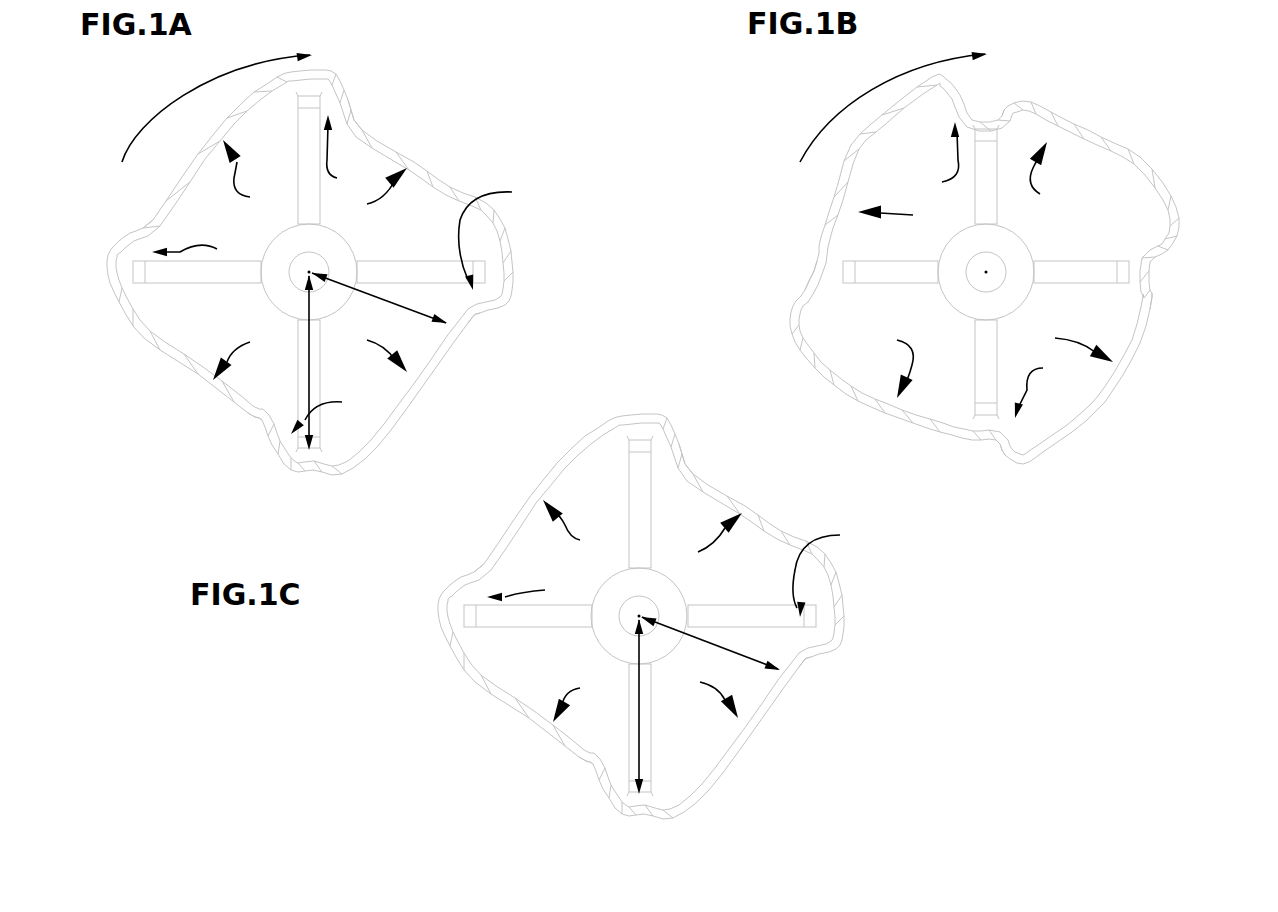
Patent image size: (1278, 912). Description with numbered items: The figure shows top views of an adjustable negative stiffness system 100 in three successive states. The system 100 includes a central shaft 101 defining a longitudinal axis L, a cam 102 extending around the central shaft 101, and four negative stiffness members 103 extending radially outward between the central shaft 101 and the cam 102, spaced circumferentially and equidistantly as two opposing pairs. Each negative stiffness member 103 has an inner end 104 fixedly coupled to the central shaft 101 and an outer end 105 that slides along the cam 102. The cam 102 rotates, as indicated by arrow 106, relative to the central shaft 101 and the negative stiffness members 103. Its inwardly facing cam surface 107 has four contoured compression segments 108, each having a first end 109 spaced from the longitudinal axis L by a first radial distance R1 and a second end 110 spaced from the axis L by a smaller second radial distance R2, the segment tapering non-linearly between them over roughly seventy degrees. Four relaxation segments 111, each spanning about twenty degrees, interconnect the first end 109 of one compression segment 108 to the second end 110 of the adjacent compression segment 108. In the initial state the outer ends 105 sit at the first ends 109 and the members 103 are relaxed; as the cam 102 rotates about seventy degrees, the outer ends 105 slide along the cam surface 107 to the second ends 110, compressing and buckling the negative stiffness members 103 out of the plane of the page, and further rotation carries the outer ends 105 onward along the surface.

In FIG. 1A, the adjustable negative stiffness system 100 is at (540, 112).
In FIG. 1B, the adjustable negative stiffness system 100 is at (1160, 75).
In FIG. 1C, the adjustable negative stiffness system 100 is at (395, 748).
In FIG. 1A, the central shaft 101 is at (328, 265).
In FIG. 1B, the central shaft 101 is at (1005, 280).
In FIG. 1C, the central shaft 101 is at (638, 620).
In FIG. 1A, the cam 102 is at (535, 222).
In FIG. 1B, the cam 102 is at (1130, 445).
In FIG. 1C, the cam 102 is at (435, 697).
In FIG. 1A, the negative stiffness members 103 is at (160, 290).
In FIG. 1B, the negative stiffness members 103 is at (1088, 262).
In FIG. 1C, the negative stiffness members 103 is at (629, 494).
In FIG. 1A, the inner end 104 is at (257, 284).
In FIG. 1B, the inner end 104 is at (932, 272).
In FIG. 1C, the inner end 104 is at (595, 616).
In FIG. 1A, the outer end 105 is at (322, 93).
In FIG. 1B, the outer end 105 is at (985, 122).
In FIG. 1C, the outer end 105 is at (634, 437).
In FIG. 1A, the arrow 106 is at (203, 90).
In FIG. 1B, the arrow 106 is at (882, 90).
In FIG. 1A, the inwardly facing cam surface 107 is at (410, 380).
In FIG. 1B, the inwardly facing cam surface 107 is at (905, 401).
In FIG. 1C, the inwardly facing cam surface 107 is at (742, 720).
In FIG. 1A, the contoured compression segments 108 is at (310, 260).
In FIG. 1B, the contoured compression segments 108 is at (984, 270).
In FIG. 1C, the contoured compression segments 108 is at (642, 610).
In FIG. 1A, the first end 109 is at (318, 90).
In FIG. 1B, the first end 109 is at (935, 98).
In FIG. 1C, the first end 109 is at (638, 437).
In FIG. 1A, the second end 110 is at (362, 130).
In FIG. 1B, the second end 110 is at (990, 122).
In FIG. 1C, the second end 110 is at (692, 477).
In FIG. 1A, the relaxation segments 111 is at (351, 276).
In FIG. 1B, the relaxation segments 111 is at (993, 270).
In FIG. 1C, the relaxation segments 111 is at (684, 572).
In FIG. 1A, the longitudinal axis L is at (311, 270).
In FIG. 1B, the longitudinal axis L is at (988, 271).
In FIG. 1C, the longitudinal axis L is at (642, 615).
In FIG. 1A, the first radial distance R1 is at (312, 372).
In FIG. 1C, the first radial distance R1 is at (641, 720).
In FIG. 1A, the second radial distance R2 is at (413, 311).
In FIG. 1C, the second radial distance R2 is at (778, 670).